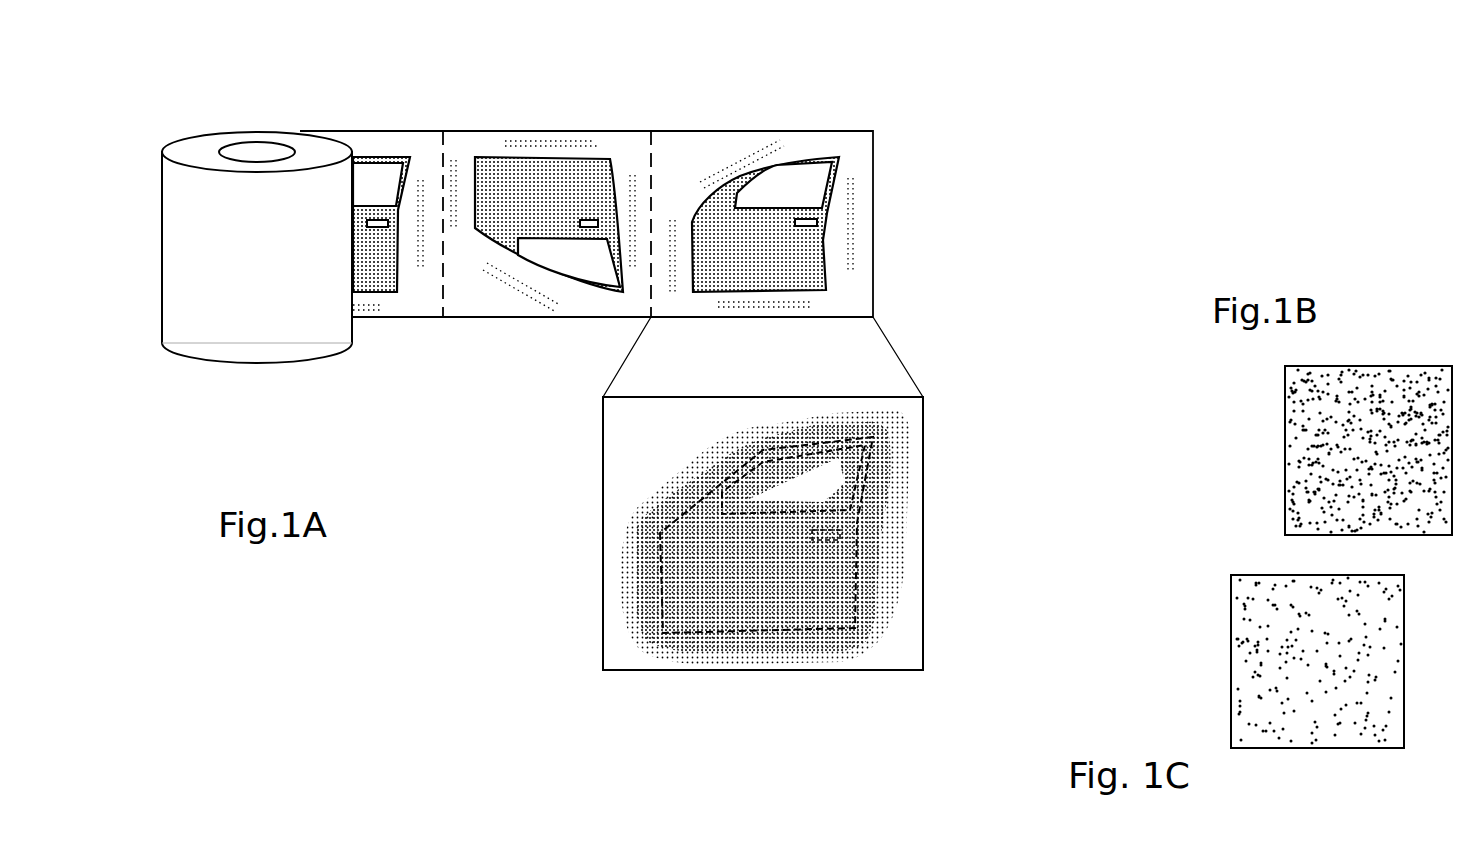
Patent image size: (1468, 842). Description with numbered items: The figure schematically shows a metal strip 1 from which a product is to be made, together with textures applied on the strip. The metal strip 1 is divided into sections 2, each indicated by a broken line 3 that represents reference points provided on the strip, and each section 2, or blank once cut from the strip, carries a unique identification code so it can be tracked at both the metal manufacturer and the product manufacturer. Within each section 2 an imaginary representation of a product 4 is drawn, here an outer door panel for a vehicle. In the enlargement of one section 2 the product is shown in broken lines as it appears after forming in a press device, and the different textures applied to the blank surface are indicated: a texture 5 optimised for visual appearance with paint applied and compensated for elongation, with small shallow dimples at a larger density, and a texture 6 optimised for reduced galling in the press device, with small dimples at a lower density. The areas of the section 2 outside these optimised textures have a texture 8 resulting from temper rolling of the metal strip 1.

In FIG. 1A, the metal strip 1 is at (220, 310).
In FIG. 1A, the section 2 is at (630, 160).
In FIG. 1A, the broken line 3 is at (440, 292).
In FIG. 1A, the product 4 is at (798, 255).
In FIG. 1A, the texture 5 is at (783, 578).
In FIG. 1B, the texture 5 is at (1327, 493).
In FIG. 1A, the texture 6 is at (883, 640).
In FIG. 1C, the texture 6 is at (1265, 640).
In FIG. 1A, the texture 8 is at (810, 483).